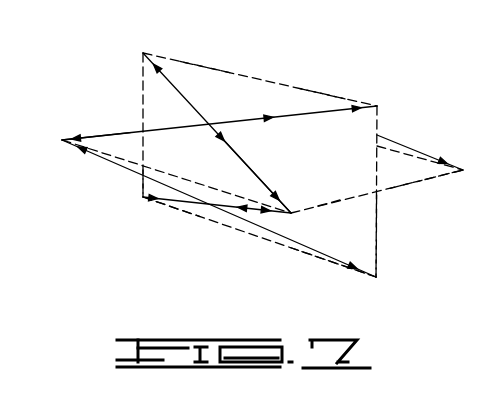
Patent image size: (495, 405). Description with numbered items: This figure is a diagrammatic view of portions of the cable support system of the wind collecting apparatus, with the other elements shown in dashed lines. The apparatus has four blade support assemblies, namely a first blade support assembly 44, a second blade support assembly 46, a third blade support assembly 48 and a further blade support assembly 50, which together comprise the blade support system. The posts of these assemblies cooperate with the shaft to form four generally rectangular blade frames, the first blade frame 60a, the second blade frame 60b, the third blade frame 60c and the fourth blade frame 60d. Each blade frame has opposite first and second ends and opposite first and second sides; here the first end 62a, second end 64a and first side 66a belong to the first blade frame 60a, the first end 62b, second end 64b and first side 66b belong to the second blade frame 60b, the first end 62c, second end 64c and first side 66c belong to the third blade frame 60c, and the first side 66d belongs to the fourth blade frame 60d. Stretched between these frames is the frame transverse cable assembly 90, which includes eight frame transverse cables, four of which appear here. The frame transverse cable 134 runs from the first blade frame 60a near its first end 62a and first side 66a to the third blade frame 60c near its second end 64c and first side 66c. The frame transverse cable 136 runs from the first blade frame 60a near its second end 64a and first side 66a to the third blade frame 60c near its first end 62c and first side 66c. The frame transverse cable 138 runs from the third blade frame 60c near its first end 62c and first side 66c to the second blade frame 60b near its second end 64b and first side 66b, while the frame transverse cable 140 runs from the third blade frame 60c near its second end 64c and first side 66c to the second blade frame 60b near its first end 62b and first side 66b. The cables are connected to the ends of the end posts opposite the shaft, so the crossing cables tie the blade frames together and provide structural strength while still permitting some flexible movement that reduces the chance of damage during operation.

The first blade support assembly 44 is at (252, 73).
The first side of first blade frame 66a is at (208, 66).
The first blade frame 60a is at (322, 82).
The second end of first blade frame 64a is at (141, 69).
The second end of second blade frame 64b is at (141, 186).
The second end of third blade frame 64c is at (108, 132).
The frame transverse cable 134 is at (270, 115).
The frame transverse cable assembly 90 is at (174, 82).
The frame transverse cable 136 is at (226, 138).
The first side of third blade frame 66c is at (124, 164).
The frame transverse cable 140 is at (124, 174).
The second blade support assembly 46 is at (262, 247).
The second blade frame 60b is at (320, 270).
The first side of second blade frame 66b is at (176, 209).
The frame transverse cable 138 is at (254, 209).
The first end of first blade frame 62a is at (385, 104).
The first end of second blade frame 62b is at (381, 262).
The third blade frame 60c is at (380, 214).
The first side of fourth blade frame 66d is at (391, 148).
The first end of third blade frame 62c is at (413, 183).
The third blade support assembly 48 is at (320, 217).
The blade support assembly 50 is at (402, 191).
The fourth blade frame 60d is at (436, 187).